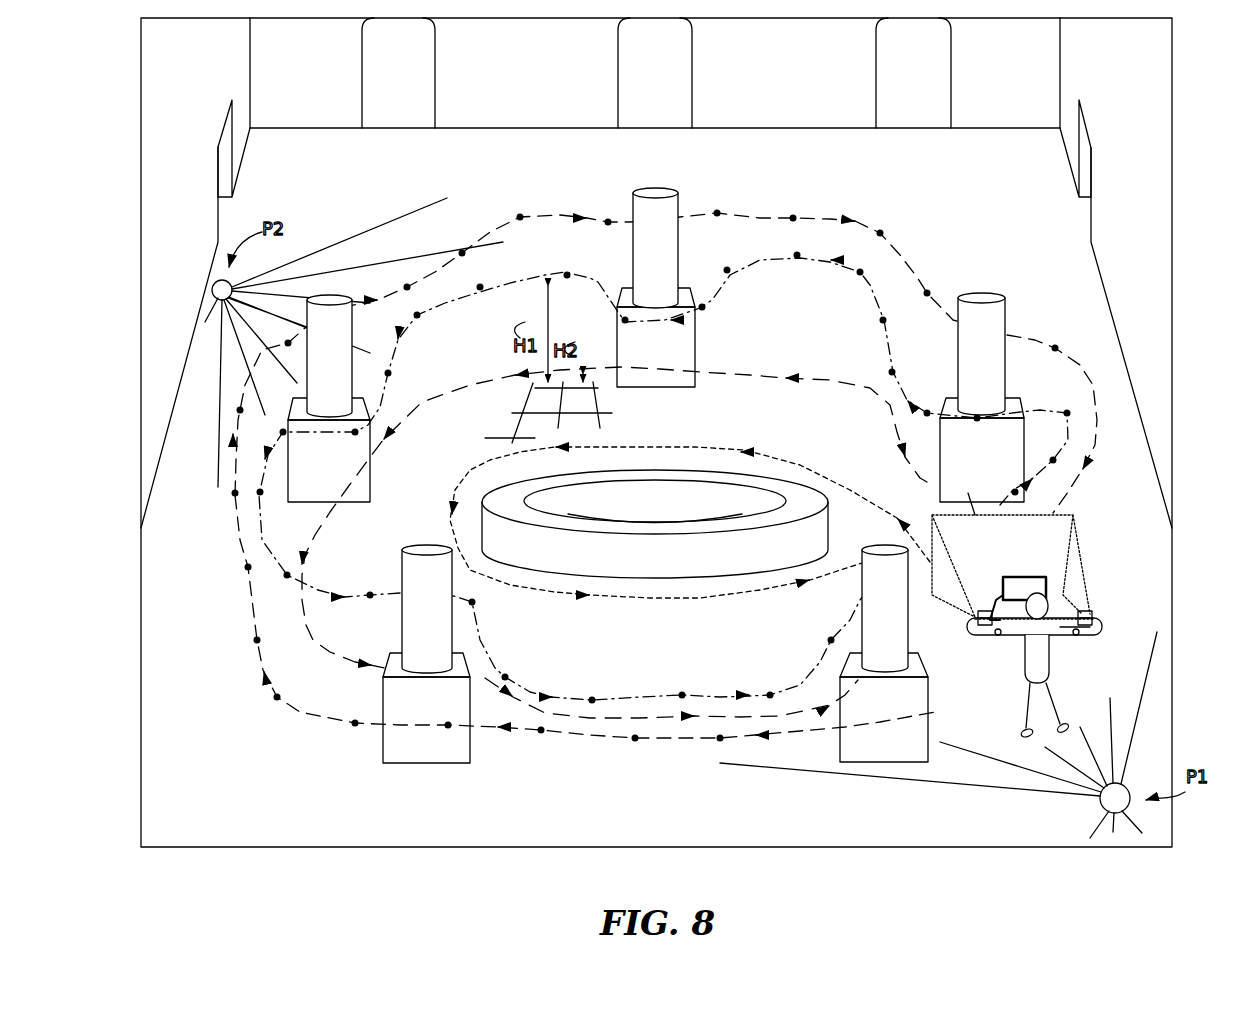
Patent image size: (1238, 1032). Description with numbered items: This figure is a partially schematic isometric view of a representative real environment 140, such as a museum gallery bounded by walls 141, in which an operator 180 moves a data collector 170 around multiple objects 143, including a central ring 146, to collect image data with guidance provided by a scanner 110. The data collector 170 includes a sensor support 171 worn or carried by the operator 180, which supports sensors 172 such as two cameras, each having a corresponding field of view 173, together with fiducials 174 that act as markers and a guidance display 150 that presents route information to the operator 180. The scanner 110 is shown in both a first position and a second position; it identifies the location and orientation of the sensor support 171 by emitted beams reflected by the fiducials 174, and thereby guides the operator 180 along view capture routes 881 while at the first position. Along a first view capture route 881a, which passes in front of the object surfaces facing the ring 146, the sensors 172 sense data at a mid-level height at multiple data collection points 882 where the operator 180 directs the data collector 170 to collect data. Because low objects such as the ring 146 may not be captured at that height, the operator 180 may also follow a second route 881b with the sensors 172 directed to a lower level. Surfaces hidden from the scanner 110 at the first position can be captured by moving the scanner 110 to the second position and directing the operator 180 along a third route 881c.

The scanner 110 is at (197, 300).
The real environment 140 is at (166, 228).
The walls 141 is at (166, 103).
The objects 143 is at (1036, 297).
The central ring 146 is at (662, 565).
The guidance display 150 is at (1024, 576).
The data collector 170 is at (1072, 615).
The sensor support 171 is at (1103, 618).
The sensors 172 is at (973, 637).
The field of view 173 is at (1085, 563).
The fiducials 174 is at (998, 637).
The operator 180 is at (1022, 662).
The view capture routes 881 is at (478, 211).
The first view capture route 881a is at (790, 268).
The second route 881b is at (697, 446).
The third route 881c is at (918, 266).
The data collection points 882 is at (795, 213).